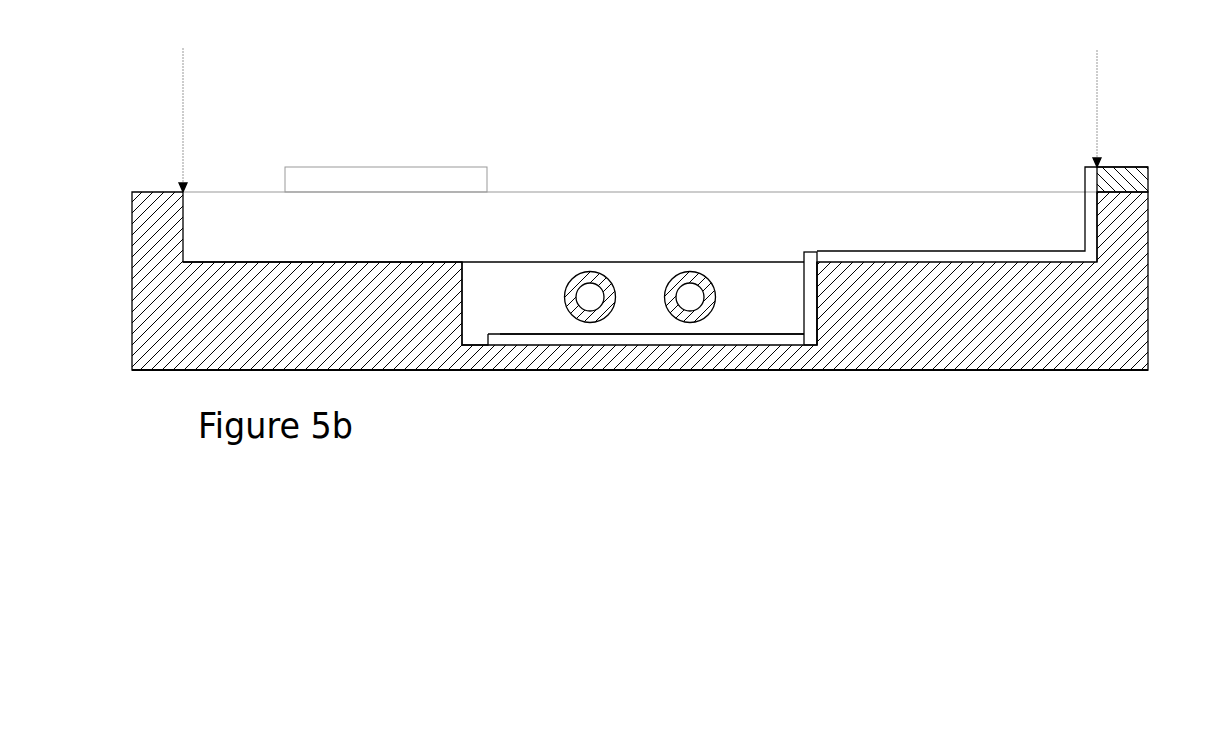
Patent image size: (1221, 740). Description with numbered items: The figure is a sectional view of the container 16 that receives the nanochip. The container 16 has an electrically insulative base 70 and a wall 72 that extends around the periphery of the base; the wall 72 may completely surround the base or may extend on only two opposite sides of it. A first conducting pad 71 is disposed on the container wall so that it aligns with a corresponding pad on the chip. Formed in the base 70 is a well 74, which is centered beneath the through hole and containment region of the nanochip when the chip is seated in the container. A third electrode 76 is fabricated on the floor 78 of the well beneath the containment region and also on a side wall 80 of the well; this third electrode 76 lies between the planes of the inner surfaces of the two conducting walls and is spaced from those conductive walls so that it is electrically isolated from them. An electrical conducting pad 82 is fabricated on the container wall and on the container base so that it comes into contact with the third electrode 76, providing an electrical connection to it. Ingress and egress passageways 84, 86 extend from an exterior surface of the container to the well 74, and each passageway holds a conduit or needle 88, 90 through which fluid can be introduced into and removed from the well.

The container 16 is at (1196, 270).
The base 70 is at (955, 315).
The first conducting pad 71 is at (322, 178).
The wall 72 is at (1130, 246).
The well 74 is at (462, 290).
The third electrode 76 is at (815, 265).
The floor 78 is at (517, 345).
The side wall 80 is at (810, 320).
The electrical conducting pad 82 is at (880, 257).
The ingress passageway 84 is at (612, 290).
The egress passageway 86 is at (681, 287).
The conduit or needle 88 is at (590, 320).
The conduit or needle 90 is at (673, 318).